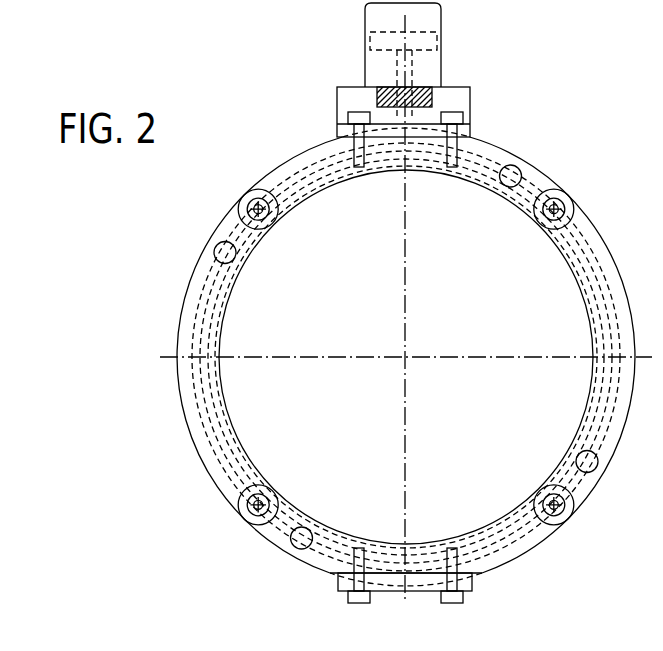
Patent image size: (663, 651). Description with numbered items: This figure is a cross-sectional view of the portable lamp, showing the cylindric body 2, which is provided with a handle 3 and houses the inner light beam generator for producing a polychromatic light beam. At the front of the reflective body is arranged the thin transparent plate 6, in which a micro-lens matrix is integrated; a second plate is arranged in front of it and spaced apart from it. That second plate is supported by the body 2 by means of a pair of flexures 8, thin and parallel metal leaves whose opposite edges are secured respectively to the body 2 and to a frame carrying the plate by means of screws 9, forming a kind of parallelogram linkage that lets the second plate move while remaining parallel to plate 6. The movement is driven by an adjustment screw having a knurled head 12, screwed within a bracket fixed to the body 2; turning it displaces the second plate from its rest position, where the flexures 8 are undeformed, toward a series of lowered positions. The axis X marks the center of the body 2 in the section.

The cylindric body 2 is at (545, 178).
The handle 3 is at (366, 31).
The thin transparent plate 6 is at (268, 413).
The flexures 8 is at (427, 128).
The screws 9 is at (462, 114).
The knurled head 12 is at (438, 35).
The valve axis X is at (400, 362).